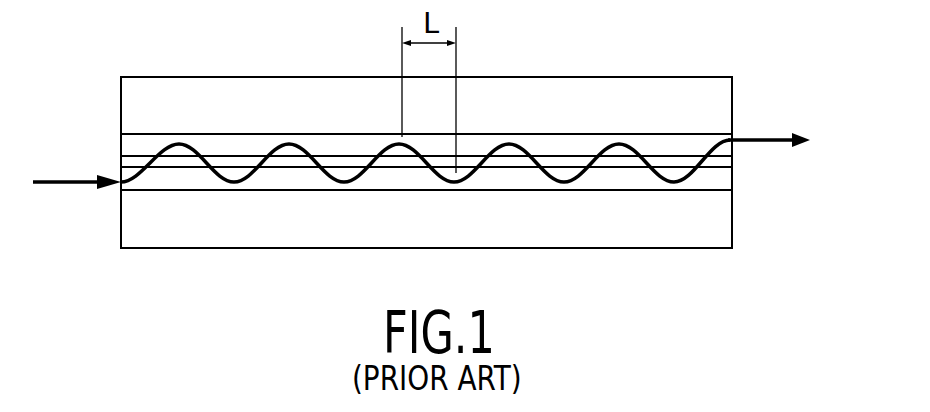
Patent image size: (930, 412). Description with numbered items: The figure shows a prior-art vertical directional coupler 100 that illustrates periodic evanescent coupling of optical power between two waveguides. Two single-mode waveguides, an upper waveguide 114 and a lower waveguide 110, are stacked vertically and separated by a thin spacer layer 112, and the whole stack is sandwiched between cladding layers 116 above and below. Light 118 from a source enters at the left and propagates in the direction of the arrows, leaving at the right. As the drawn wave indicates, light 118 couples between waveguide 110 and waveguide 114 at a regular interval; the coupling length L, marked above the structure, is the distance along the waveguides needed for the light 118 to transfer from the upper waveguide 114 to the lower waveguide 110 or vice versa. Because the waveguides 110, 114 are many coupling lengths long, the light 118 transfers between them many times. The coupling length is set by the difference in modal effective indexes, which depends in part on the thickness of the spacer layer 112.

The vertical directional coupler 100 is at (238, 32).
The lower waveguide 110 is at (732, 182).
The spacer layer 112 is at (732, 158).
The upper waveguide 114 is at (121, 143).
The cladding layers 116 is at (121, 105).
The light 118 is at (812, 140).